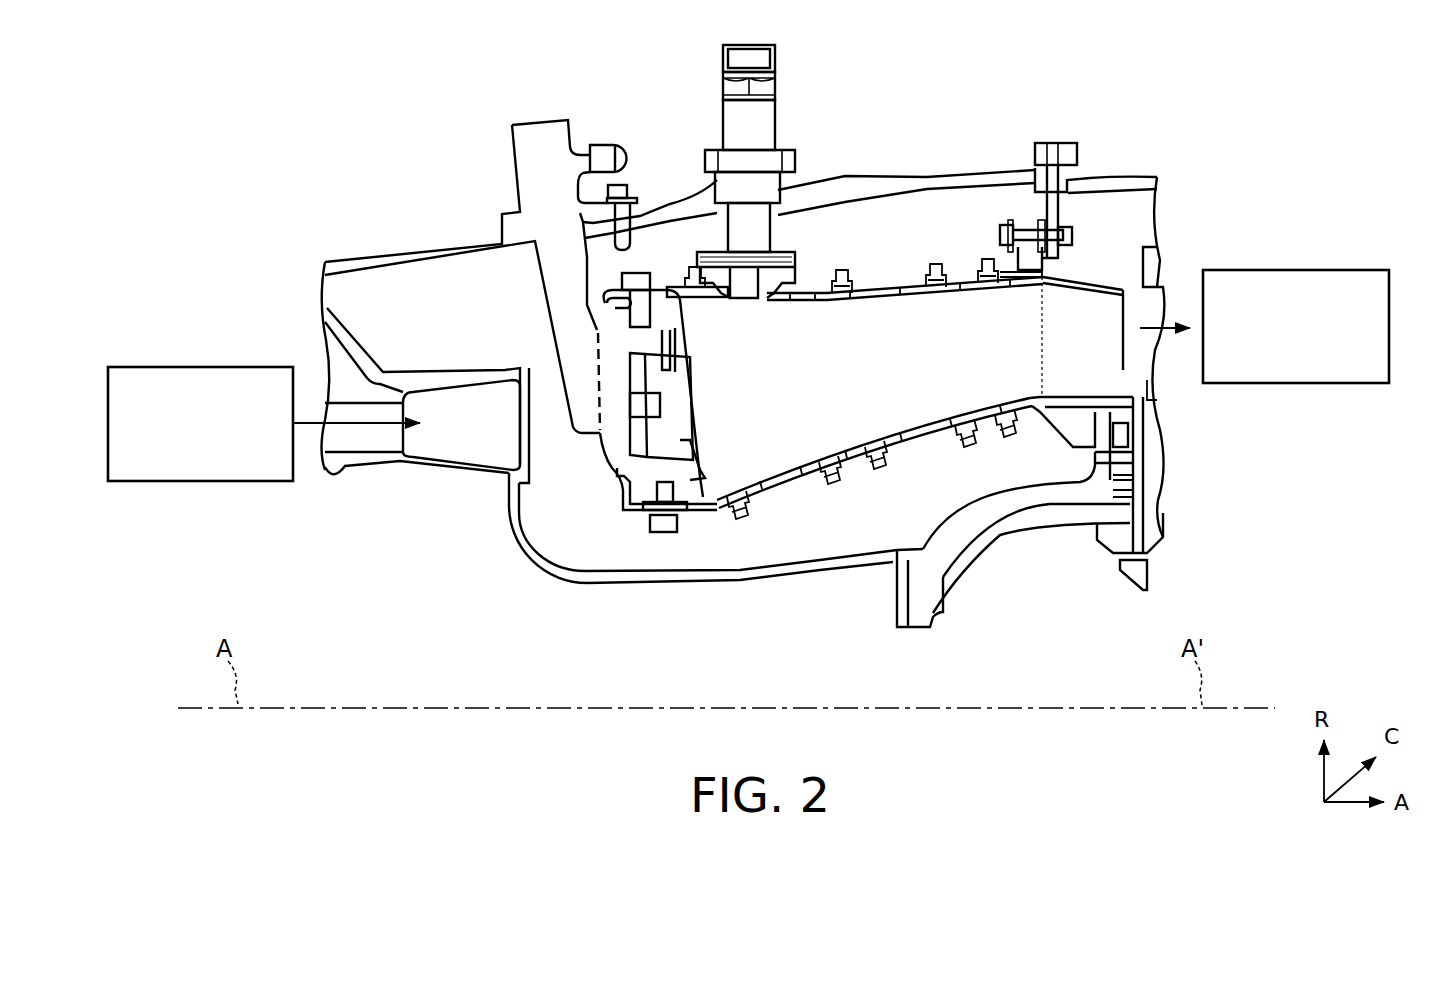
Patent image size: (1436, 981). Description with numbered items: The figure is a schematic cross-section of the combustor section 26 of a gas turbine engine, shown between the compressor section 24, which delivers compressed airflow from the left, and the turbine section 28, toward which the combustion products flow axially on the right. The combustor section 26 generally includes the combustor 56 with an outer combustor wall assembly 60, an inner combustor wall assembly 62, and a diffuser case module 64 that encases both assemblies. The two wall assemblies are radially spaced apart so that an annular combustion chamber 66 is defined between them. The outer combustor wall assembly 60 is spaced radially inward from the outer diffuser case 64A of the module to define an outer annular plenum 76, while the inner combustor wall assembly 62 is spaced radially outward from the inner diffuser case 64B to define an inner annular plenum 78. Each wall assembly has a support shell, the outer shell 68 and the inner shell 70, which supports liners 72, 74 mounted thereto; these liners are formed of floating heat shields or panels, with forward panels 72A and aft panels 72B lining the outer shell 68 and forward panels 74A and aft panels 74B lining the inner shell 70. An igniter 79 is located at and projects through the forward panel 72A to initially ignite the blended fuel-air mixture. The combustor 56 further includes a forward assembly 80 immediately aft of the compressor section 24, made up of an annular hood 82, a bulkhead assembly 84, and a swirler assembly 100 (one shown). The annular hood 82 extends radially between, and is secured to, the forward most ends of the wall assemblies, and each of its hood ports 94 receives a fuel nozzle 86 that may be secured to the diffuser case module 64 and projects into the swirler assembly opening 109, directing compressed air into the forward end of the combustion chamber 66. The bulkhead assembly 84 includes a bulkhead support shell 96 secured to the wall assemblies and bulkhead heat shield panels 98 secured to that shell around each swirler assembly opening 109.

The compressor section 24 is at (197, 482).
The combustor section 26 is at (1078, 92).
The turbine section 28 is at (1293, 383).
The combustor 56 is at (990, 88).
The outer combustor wall assembly 60 is at (895, 270).
The inner combustor wall assembly 62 is at (930, 489).
The diffuser case module 64 is at (833, 374).
The outer diffuser case 64A is at (963, 172).
The inner diffuser case 64B is at (745, 582).
The annular combustion chamber 66 is at (865, 383).
The outer support shell 68 is at (868, 290).
The inner support shell 70 is at (930, 428).
The outer liner 72 is at (895, 325).
The forward panels 72A is at (780, 306).
The aft panels 72B is at (925, 293).
The inner liner 74 is at (881, 427).
The forward panels 74A is at (780, 458).
The aft panels 74B is at (958, 423).
The outer annular plenum 76 is at (836, 231).
The inner annular plenum 78 is at (826, 531).
The igniter 79 is at (783, 128).
The forward assembly 80 is at (675, 449).
The annular hood 82 is at (618, 488).
The bulkhead assembly 84 is at (706, 337).
The fuel nozzle 86 is at (571, 231).
The hood port 94 is at (617, 470).
The bulkhead support shell 96 is at (630, 503).
The bulkhead heat shields or panels 98 is at (700, 457).
The swirler assembly 100 is at (690, 425).
The swirler assembly opening 109 is at (710, 392).